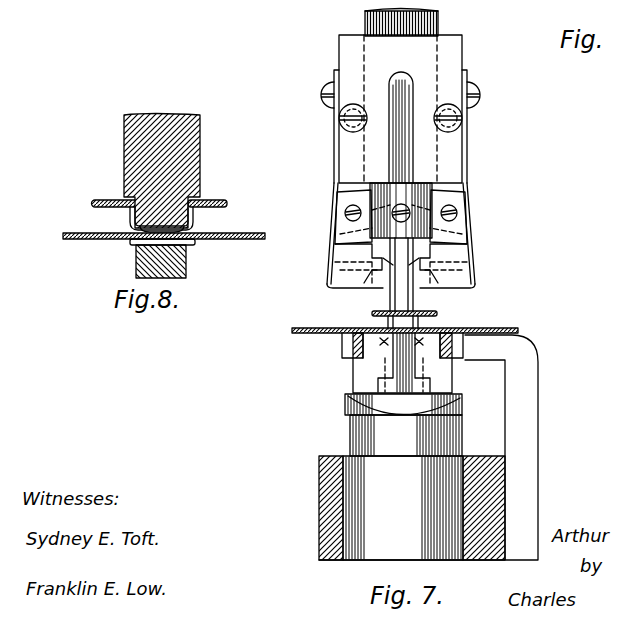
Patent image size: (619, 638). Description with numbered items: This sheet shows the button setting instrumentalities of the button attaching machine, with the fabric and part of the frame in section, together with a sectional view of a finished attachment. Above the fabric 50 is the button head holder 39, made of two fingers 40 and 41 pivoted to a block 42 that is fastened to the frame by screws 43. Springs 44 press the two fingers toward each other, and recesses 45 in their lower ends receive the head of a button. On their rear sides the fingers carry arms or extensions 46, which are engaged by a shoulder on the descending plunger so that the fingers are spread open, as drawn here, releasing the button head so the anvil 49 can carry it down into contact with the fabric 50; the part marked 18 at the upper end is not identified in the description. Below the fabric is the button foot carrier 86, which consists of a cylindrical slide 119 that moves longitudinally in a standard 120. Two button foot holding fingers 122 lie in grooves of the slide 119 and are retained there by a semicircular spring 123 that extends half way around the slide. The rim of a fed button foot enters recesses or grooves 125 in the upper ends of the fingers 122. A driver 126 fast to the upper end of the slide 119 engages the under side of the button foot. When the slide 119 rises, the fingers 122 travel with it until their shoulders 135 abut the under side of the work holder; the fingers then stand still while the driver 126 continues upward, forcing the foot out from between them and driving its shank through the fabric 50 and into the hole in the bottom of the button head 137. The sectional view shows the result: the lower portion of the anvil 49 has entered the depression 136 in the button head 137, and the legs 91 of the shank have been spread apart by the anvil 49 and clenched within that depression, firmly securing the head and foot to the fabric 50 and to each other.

In FIG. 7, the knurled head 18 is at (440, 26).
In FIG. 7, the button head holder 39 is at (452, 267).
In FIG. 7, the button head finger 40 is at (335, 283).
In FIG. 7, the button head finger 41 is at (462, 295).
In FIG. 7, the block 42 is at (455, 162).
In FIG. 7, the screws 43 is at (345, 128).
In FIG. 7, the springs 44 is at (336, 196).
In FIG. 7, the recesses 45 is at (336, 269).
In FIG. 7, the arms or extensions 46 is at (348, 232).
In FIG. 7, the anvil 49 is at (387, 310).
In FIG. 8, the anvil 49 is at (122, 150).
In FIG. 7, the fabric 50 is at (520, 330).
In FIG. 8, the fabric 50 is at (236, 240).
In FIG. 7, the button foot carrier 86 is at (390, 400).
In FIG. 8, the legs 91 is at (233, 217).
In FIG. 7, the slide 119 is at (372, 486).
In FIG. 7, the standard 120 is at (332, 527).
In FIG. 7, the button foot holding finger 122 is at (385, 380).
In FIG. 7, the semicircular spring 123 is at (345, 437).
In FIG. 7, the recesses or grooves 125 is at (365, 345).
In FIG. 7, the driver 126 is at (440, 404).
In FIG. 8, the driver 126 is at (135, 264).
In FIG. 7, the shoulders 135 is at (350, 355).
In FIG. 8, the depression 136 is at (196, 196).
In FIG. 7, the button head 137 is at (425, 314).
In FIG. 8, the button head 137 is at (104, 197).